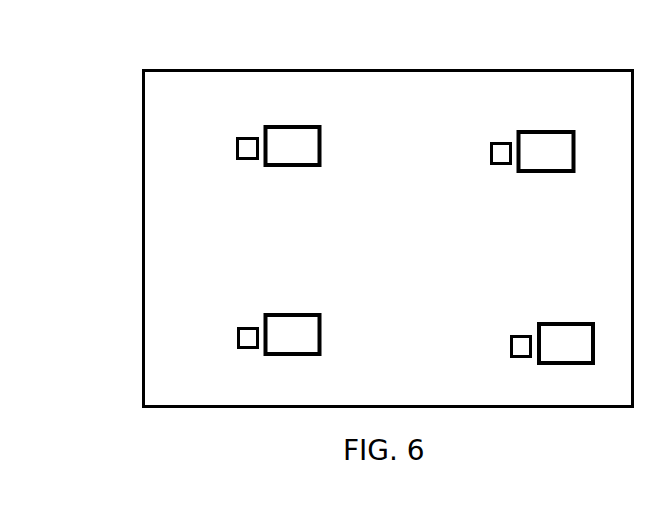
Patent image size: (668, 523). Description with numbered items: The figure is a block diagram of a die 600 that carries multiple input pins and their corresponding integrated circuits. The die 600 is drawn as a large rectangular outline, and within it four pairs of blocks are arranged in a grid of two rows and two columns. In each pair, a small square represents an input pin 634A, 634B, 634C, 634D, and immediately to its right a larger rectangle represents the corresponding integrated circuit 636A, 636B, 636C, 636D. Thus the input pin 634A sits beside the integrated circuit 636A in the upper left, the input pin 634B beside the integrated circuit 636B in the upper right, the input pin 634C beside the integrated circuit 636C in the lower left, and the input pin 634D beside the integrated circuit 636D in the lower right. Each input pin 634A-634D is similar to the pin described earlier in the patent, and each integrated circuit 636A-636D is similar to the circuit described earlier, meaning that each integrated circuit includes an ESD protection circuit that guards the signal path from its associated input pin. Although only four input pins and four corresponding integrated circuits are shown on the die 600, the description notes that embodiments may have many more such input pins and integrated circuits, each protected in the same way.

The die 600 is at (78, 52).
The input pin 634A is at (247, 150).
The input pin 634B is at (500, 157).
The input pin 634C is at (248, 338).
The input pin 634D is at (520, 348).
The integrated circuit 636A is at (290, 134).
The integrated circuit 636B is at (553, 138).
The integrated circuit 636C is at (295, 328).
The integrated circuit 636D is at (575, 330).